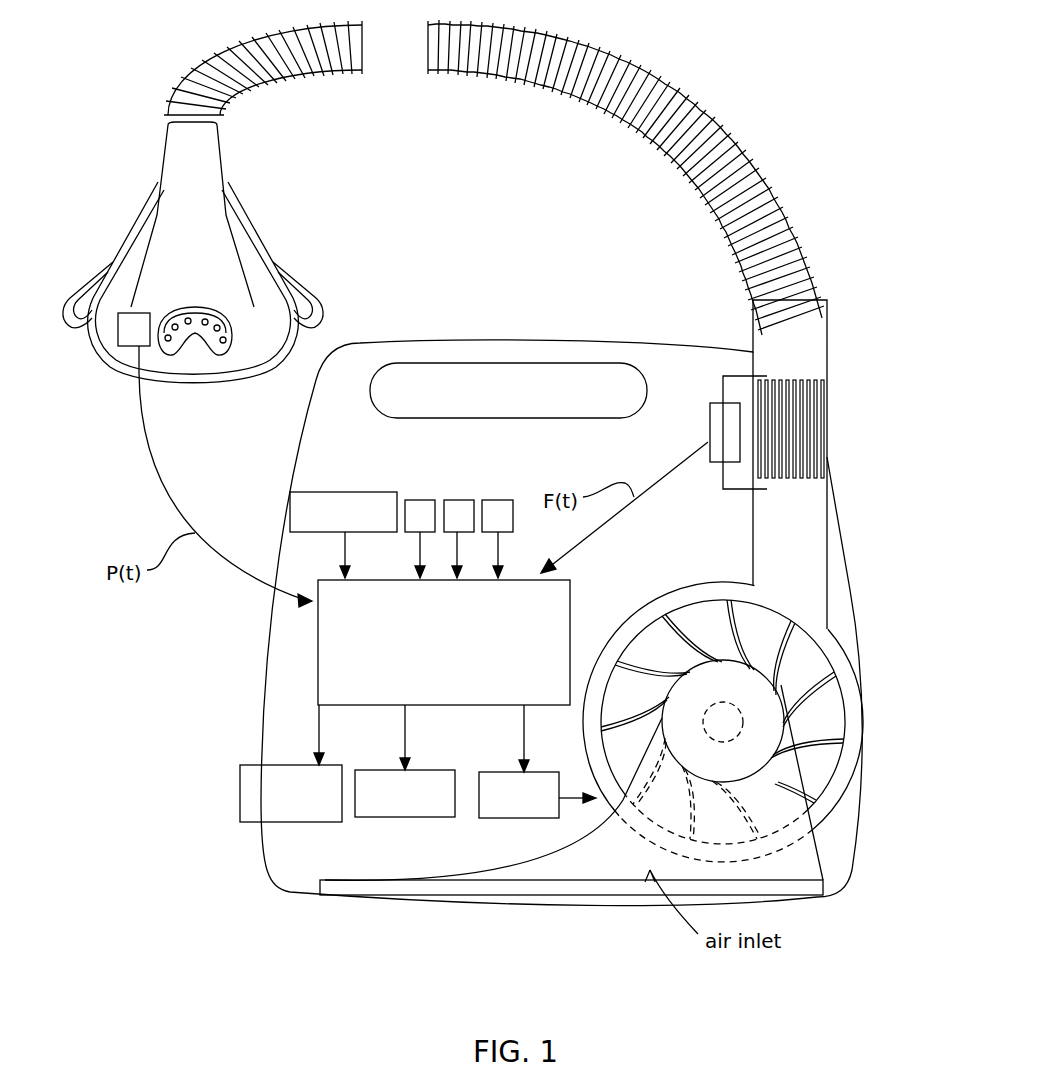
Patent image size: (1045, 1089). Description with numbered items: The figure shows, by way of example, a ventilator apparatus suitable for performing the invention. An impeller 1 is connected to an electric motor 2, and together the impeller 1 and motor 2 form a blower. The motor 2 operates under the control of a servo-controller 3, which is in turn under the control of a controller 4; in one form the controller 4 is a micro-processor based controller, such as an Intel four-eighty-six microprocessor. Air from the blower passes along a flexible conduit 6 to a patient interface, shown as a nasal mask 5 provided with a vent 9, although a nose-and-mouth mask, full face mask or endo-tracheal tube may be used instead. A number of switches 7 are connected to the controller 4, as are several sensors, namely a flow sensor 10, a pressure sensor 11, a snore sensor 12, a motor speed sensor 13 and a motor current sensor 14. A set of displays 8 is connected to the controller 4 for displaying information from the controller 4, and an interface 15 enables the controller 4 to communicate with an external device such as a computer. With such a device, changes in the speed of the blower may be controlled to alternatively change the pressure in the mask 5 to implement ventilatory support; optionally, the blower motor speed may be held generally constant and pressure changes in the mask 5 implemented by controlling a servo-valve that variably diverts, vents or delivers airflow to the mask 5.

The impeller 1 is at (822, 766).
The electric motor 2 is at (705, 552).
The servo-controller 3 is at (488, 810).
The controller 4 is at (332, 642).
The nasal mask 5 is at (253, 268).
The flexible conduit 6 is at (452, 50).
The switches 7 is at (312, 492).
The displays 8 is at (360, 818).
The vent 9 is at (230, 338).
The flow sensor 10 is at (684, 431).
The pressure sensor 11 is at (131, 346).
The snore sensor 12 is at (422, 498).
The motor speed sensor 13 is at (456, 498).
The motor current sensor 14 is at (512, 498).
The interface 15 is at (257, 778).